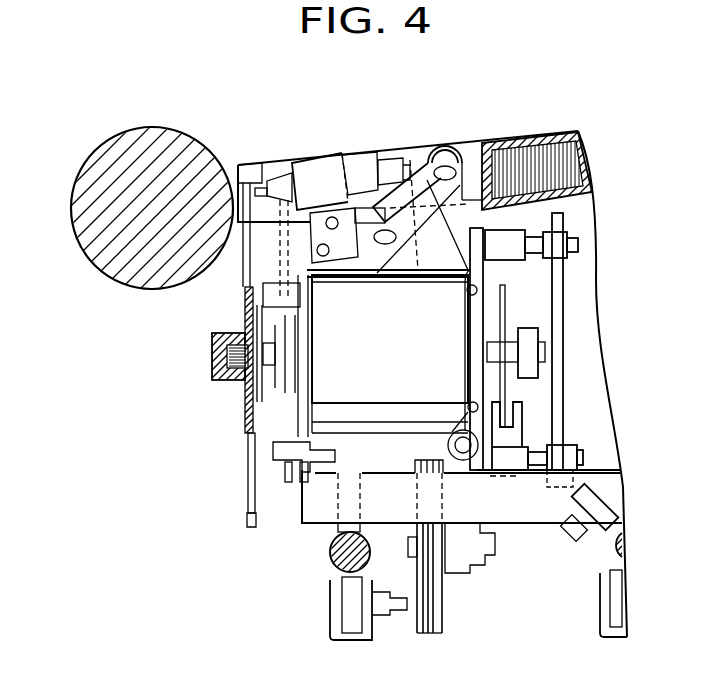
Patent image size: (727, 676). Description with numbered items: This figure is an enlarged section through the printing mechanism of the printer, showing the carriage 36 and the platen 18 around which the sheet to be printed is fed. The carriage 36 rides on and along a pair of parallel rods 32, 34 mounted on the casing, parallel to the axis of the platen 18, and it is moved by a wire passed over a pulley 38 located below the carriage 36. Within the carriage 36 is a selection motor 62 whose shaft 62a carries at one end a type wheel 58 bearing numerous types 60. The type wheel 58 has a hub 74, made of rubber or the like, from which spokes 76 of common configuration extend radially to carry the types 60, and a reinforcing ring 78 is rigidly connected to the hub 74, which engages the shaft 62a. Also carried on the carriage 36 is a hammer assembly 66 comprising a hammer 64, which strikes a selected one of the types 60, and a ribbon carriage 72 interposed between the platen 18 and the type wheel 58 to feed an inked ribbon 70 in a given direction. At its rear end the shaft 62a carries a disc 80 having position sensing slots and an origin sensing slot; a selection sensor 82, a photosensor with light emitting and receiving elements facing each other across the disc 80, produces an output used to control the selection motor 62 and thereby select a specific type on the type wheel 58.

The platen 18 is at (90, 187).
The inked ribbon 70 is at (240, 185).
The hammer 64 is at (258, 186).
The hammer assembly 66 is at (322, 180).
The carriage 36 is at (432, 155).
The ribbon carriage 72 is at (517, 139).
The types 60 is at (237, 223).
The hub 74 is at (243, 290).
The reinforcing ring 78 is at (212, 357).
The disc 80 is at (507, 302).
The selection motor 62 is at (398, 358).
The selection sensor 82 is at (515, 433).
The type wheel 58 is at (242, 417).
The spokes 76 is at (248, 488).
The shaft 62a is at (267, 367).
The rod 32 is at (330, 560).
The rod 34 is at (603, 560).
The pulley 38 is at (443, 603).